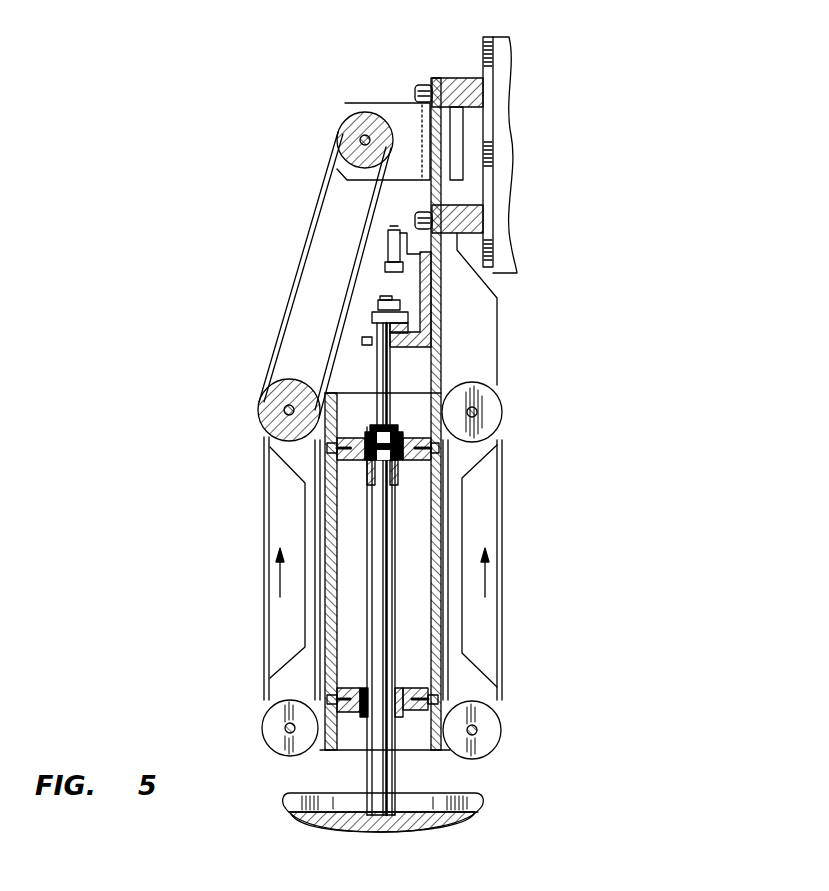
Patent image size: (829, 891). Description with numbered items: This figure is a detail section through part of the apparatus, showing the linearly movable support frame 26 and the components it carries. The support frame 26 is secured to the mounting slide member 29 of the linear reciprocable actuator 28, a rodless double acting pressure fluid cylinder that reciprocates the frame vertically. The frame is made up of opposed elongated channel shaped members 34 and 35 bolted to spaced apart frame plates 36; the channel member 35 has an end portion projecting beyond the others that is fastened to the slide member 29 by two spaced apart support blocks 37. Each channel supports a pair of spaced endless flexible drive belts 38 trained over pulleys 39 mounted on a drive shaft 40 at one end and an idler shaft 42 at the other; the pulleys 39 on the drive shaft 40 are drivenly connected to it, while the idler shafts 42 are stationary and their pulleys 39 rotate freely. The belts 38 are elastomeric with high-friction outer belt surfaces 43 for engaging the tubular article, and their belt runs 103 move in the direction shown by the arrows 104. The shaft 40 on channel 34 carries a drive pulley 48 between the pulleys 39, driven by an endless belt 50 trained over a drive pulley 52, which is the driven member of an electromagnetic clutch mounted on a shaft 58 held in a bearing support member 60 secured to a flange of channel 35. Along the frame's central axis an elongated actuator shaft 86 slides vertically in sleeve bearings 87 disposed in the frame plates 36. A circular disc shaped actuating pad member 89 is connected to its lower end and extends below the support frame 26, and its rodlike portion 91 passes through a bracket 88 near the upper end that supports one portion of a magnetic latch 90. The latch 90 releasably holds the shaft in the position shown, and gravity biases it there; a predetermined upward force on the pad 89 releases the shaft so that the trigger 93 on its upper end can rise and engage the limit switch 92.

The support frame 26 is at (497, 322).
The linear reciprocable actuator 28 is at (520, 253).
The mounting slide member 29 is at (512, 150).
The channel shaped member 34 is at (333, 600).
The channel shaped member 35 is at (441, 380).
The frame plate 36 is at (353, 462).
The support block 37 is at (467, 82).
The drive belt 38 is at (269, 551).
The pulley 39 is at (500, 422).
The drive shaft 40 is at (270, 398).
The idler shaft 42 is at (286, 728).
The outer belt surface 43 is at (264, 488).
The drive pulley 48 is at (284, 410).
The endless belt 50 is at (300, 282).
The drive pulley 52 is at (338, 140).
The shaft 58 is at (361, 134).
The bearing support member 60 is at (402, 102).
The actuator shaft 86 is at (385, 634).
The sleeve bearing 87 is at (400, 462).
The bracket 88 is at (431, 292).
The actuating pad member 89 is at (308, 822).
The magnetic latch 90 is at (410, 318).
The rodlike portion 91 is at (380, 365).
The limit switch 92 is at (388, 240).
The trigger 93 is at (396, 300).
The belt run 103 is at (269, 521).
The arrow 104 is at (280, 583).